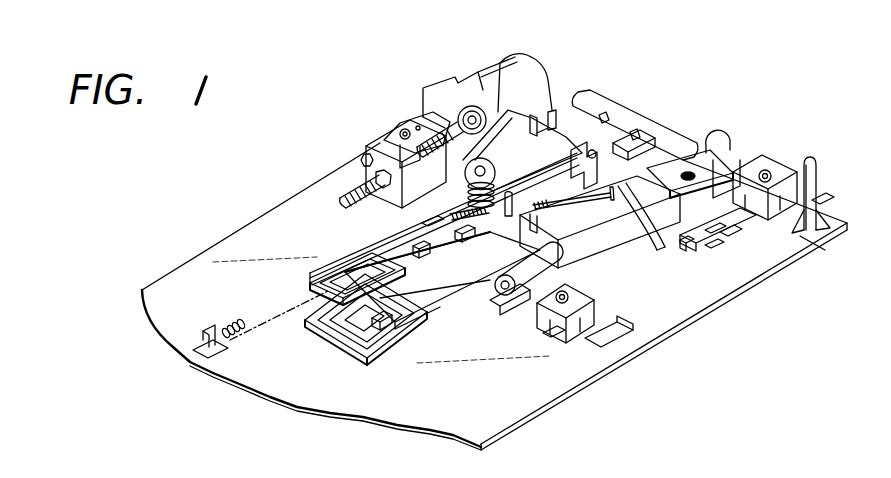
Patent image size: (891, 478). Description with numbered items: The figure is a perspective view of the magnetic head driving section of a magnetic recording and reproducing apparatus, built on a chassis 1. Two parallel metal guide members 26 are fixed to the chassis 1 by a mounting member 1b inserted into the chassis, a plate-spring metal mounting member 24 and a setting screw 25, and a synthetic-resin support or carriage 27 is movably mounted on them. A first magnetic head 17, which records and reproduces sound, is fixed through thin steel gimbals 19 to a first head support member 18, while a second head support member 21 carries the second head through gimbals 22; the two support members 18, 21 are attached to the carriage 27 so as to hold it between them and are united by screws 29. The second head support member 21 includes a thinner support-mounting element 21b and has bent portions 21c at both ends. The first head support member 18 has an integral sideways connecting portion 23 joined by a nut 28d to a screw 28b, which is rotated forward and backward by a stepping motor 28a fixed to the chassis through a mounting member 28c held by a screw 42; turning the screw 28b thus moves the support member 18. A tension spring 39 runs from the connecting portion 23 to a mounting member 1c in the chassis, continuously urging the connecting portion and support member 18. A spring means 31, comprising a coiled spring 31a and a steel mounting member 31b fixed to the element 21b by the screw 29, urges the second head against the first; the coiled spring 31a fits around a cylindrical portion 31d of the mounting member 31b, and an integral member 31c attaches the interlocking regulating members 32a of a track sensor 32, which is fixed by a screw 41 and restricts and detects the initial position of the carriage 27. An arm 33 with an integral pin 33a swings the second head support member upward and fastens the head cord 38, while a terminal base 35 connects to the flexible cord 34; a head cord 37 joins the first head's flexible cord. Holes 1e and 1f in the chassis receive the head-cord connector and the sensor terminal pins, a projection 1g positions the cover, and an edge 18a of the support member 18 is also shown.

The chassis 1 is at (670, 131).
The mounting member 1b is at (823, 203).
The mounting member 1c is at (201, 336).
The hole 1e is at (622, 325).
The hole 1f is at (723, 236).
The projection 1g is at (813, 171).
The first magnetic head 17 is at (378, 318).
The first head support member 18 is at (458, 286).
The slide plate edge 18a is at (443, 315).
The gimbals 19 is at (355, 330).
The second head support member 21 is at (318, 262).
The support-mounting element 21b is at (592, 92).
The bent portions 21c is at (373, 244).
The gimbals 22 is at (311, 284).
The connecting portion 23 is at (368, 147).
The metal mounting member 24 is at (753, 163).
The setting screw 25 is at (768, 171).
The guide members 26 is at (508, 300).
The support (carriage) 27 is at (603, 233).
The motor 28a is at (482, 74).
The screw 28b is at (343, 200).
The mounting member 28c is at (438, 88).
The nut 28d is at (362, 158).
The screws 29 is at (638, 132).
The spring means 31 is at (540, 103).
The coiled spring 31a is at (566, 84).
The mounting member 31b is at (494, 124).
The member 31c is at (682, 152).
The cylindrical portion 31d is at (406, 128).
The track sensor 32 is at (755, 240).
The interlocking regulating members 32a is at (715, 246).
The arm 33 is at (536, 217).
The pin 33a is at (515, 203).
The flexible cord 34 is at (422, 250).
The terminal base 35 is at (478, 232).
The head cord 37 is at (684, 242).
The head cord 38 is at (652, 250).
The tension spring 39 is at (257, 312).
The screw 41 is at (812, 243).
The screw 42 is at (398, 135).